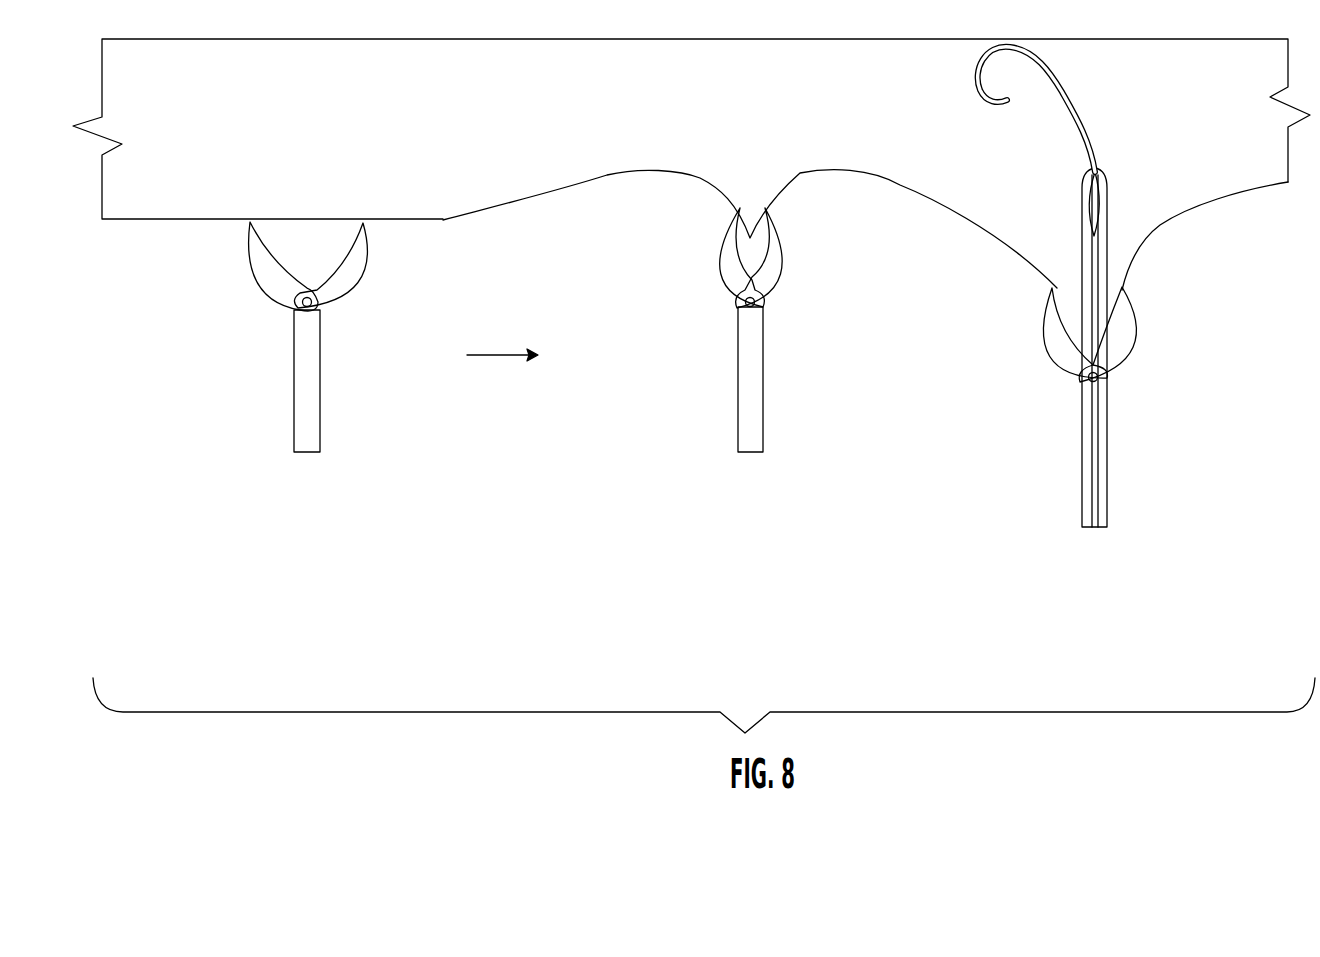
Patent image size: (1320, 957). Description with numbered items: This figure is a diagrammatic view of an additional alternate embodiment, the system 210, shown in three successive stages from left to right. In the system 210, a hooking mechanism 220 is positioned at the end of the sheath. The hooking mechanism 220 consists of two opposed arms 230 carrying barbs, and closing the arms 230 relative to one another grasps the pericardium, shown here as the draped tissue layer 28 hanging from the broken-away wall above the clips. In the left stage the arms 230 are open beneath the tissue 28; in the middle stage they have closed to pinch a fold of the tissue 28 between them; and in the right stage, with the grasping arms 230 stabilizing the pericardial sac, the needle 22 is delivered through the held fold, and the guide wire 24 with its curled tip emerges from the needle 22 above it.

The fabric 28 is at (573, 182).
The guide wire 24 is at (1064, 101).
The needle 22 is at (1108, 228).
The system 210 is at (260, 457).
The hooking mechanism 220 is at (250, 260).
The opposed arms 230 is at (284, 286).